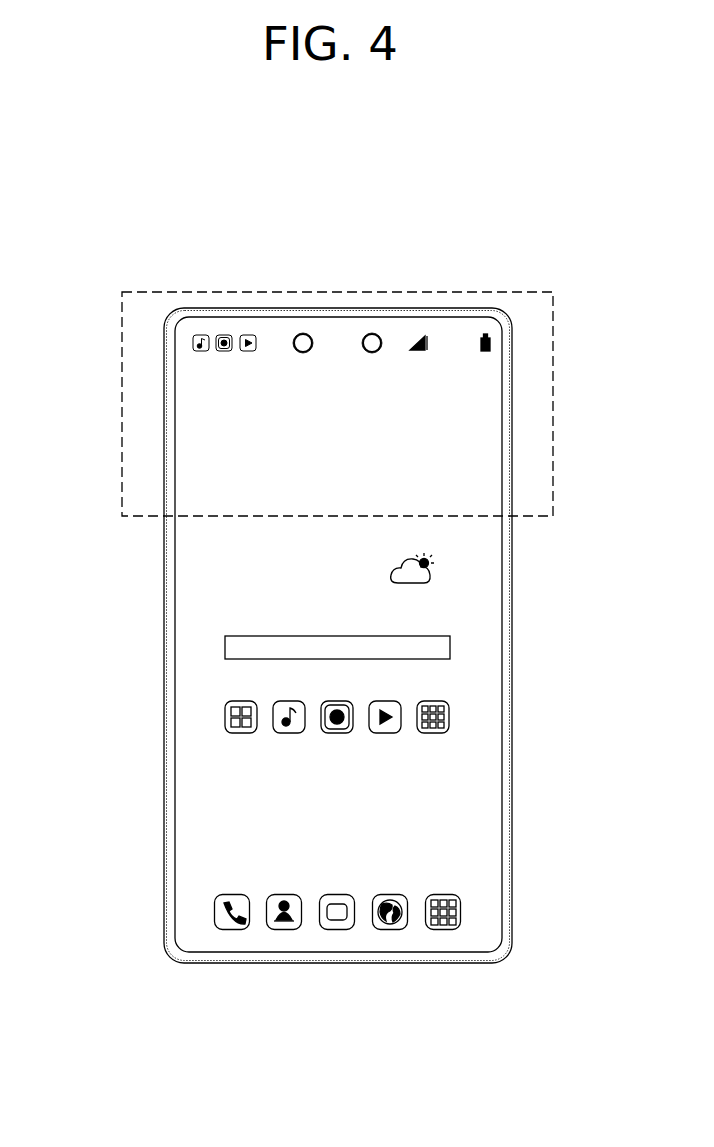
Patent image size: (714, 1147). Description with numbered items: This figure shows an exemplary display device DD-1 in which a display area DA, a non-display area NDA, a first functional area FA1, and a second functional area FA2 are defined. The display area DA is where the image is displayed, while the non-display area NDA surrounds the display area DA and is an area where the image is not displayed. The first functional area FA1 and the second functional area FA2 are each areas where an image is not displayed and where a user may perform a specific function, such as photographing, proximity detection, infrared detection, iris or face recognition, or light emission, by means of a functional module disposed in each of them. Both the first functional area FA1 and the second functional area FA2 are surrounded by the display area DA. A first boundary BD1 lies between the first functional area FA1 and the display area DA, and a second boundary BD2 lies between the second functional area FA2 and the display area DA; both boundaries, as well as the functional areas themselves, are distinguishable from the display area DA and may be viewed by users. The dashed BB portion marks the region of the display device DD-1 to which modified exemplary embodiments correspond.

The display device DD-1 is at (549, 262).
The display area DA is at (493, 613).
The non-display area NDA is at (508, 647).
The first functional area FA1 is at (303, 334).
The second functional area FA2 is at (372, 334).
The first boundary BD1 is at (296, 336).
The second boundary BD2 is at (378, 336).
The BB portion BB is at (122, 383).